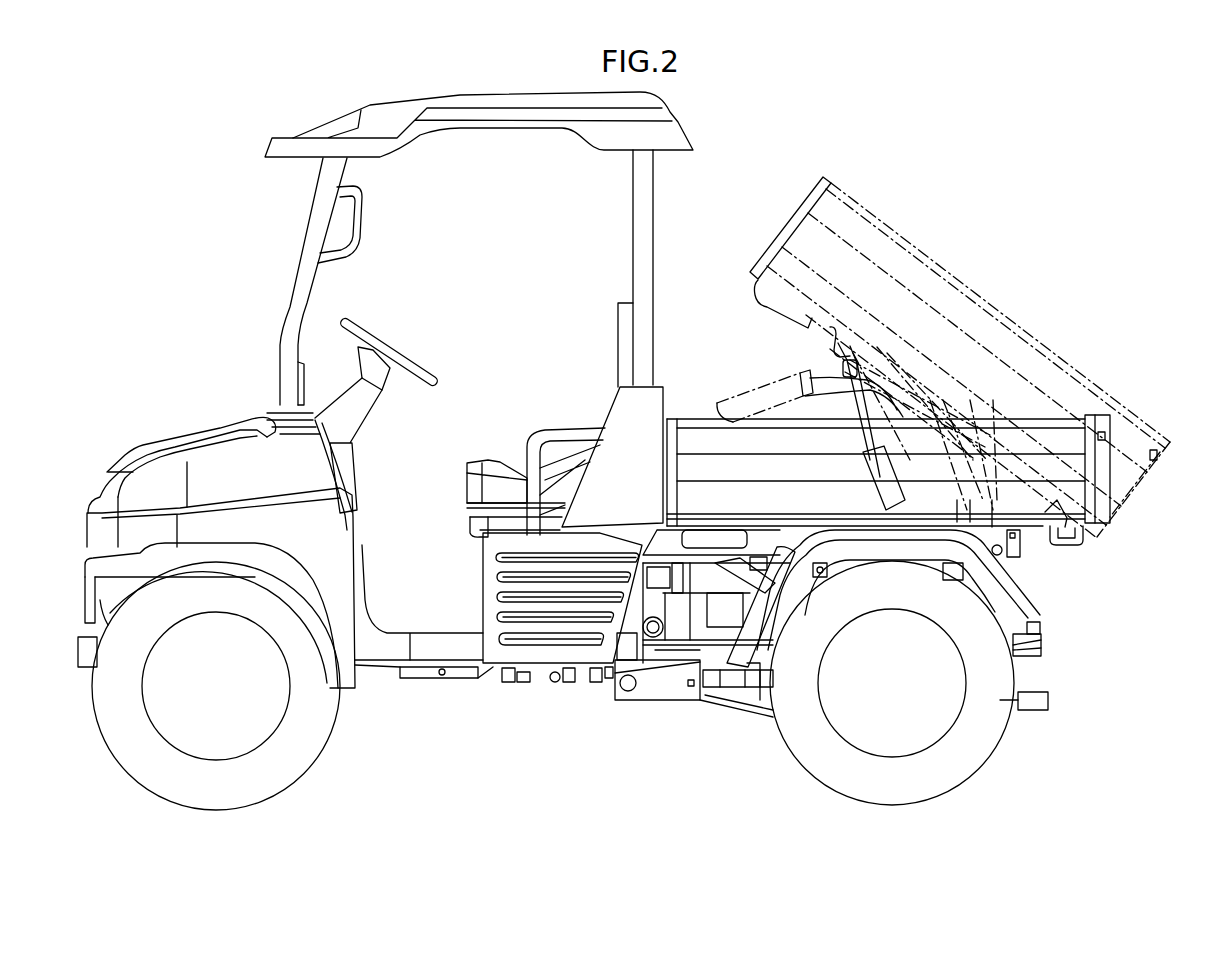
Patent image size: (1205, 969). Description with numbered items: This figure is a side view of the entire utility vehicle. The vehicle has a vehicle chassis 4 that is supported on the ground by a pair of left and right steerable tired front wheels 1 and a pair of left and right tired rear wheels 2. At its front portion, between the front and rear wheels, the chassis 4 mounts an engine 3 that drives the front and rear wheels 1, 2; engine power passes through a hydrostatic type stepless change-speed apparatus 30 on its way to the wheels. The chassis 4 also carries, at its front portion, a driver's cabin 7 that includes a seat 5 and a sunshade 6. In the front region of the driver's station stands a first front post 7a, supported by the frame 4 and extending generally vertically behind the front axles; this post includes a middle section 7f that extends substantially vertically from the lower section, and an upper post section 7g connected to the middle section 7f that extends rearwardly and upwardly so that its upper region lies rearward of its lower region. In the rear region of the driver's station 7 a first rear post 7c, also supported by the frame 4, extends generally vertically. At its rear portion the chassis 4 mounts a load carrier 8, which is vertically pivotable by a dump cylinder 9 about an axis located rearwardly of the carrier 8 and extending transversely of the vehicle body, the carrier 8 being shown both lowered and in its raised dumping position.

The front wheels 1 is at (296, 768).
The rear wheels 2 is at (808, 762).
The engine 3 is at (685, 613).
The vehicle chassis 4 is at (773, 540).
The seat 5 is at (476, 458).
The sunshade 6 is at (680, 140).
The driver's cabin 7 is at (455, 277).
The first front post 7a is at (290, 334).
The first rear post 7c is at (646, 222).
The middle section 7f is at (300, 366).
The upper post section 7g is at (308, 219).
The load carrier 8 is at (1082, 427).
The dump cylinder 9 is at (866, 465).
The hydrostatic type stepless change-speed apparatus 30 is at (1041, 650).